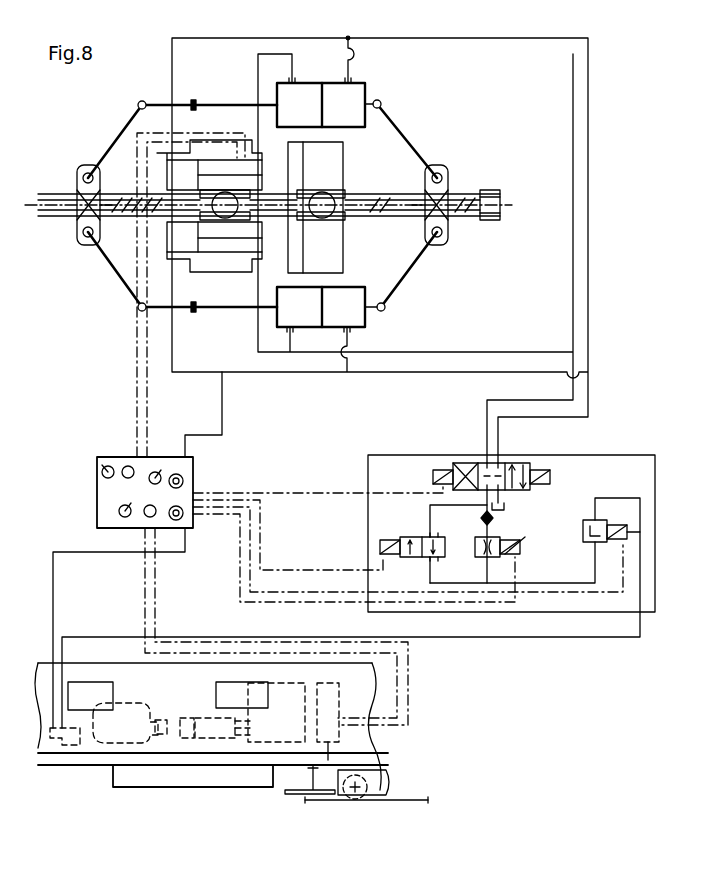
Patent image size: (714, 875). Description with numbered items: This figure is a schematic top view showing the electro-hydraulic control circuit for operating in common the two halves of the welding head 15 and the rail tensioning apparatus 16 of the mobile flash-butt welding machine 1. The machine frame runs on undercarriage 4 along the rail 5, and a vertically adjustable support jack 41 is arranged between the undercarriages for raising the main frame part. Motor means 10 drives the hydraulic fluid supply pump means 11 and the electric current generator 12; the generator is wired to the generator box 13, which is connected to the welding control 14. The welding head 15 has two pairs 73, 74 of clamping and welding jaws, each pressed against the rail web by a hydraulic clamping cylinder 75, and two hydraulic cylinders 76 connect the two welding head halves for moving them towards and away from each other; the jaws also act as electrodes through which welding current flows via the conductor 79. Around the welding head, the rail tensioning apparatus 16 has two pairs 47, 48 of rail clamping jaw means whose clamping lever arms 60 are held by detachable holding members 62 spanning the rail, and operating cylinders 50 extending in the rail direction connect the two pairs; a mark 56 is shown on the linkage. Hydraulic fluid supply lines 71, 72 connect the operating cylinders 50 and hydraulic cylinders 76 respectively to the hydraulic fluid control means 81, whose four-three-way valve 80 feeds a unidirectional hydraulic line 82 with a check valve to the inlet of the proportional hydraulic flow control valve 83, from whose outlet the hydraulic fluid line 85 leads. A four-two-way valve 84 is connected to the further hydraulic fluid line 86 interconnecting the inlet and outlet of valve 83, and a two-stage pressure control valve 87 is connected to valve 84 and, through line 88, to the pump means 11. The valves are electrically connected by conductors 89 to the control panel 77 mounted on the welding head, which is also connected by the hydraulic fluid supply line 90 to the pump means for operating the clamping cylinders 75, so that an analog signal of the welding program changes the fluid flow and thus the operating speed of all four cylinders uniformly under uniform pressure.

The mobile electric flash-butt welding machine 1 is at (398, 748).
The undercarriage 4 is at (370, 791).
The rail 5 is at (488, 197).
The motor means 10 is at (107, 738).
The hydraulic fluid supply pump means 11 is at (75, 750).
The electric current generator 12 is at (205, 730).
The generator box 13 is at (268, 740).
The welding control 14 is at (328, 760).
The welding head 15 is at (356, 237).
The rail tensioning apparatus 16 is at (82, 166).
The support jack 41 is at (300, 795).
The pair of rail clamping jaw means 47 is at (100, 222).
The pair of rail clamping jaw means 48 is at (418, 200).
The operating cylinder 50 is at (362, 100).
The adjusting member 56 is at (197, 100).
The clamping lever arm 60 is at (124, 126).
The holding member 62 is at (449, 172).
The hydraulic fluid supply line 71 is at (296, 70).
The hydraulic fluid supply line 72 is at (352, 70).
The pair of clamping and welding jaws 73 is at (212, 226).
The pair of clamping and welding jaws 74 is at (342, 198).
The hydraulic clamping cylinder 75 is at (226, 220).
The hydraulic cylinder 76 is at (167, 172).
The control panel 77 is at (97, 498).
The conductor 79 is at (137, 356).
The 4/3-way valve 80 is at (530, 465).
The hydraulic fluid control means 81 is at (400, 455).
The unidirectional hydraulic line 82 is at (493, 533).
The proportional hydraulic flow control valve 83 is at (514, 549).
The 4/2-way valve 84 is at (412, 537).
The hydraulic fluid line 85 is at (484, 578).
The hydraulic fluid line 86 is at (430, 574).
The two-stage pressure control valve 87 is at (592, 545).
The line 88 is at (636, 638).
The conductors 89 is at (262, 568).
The hydraulic fluid supply line 90 is at (222, 405).